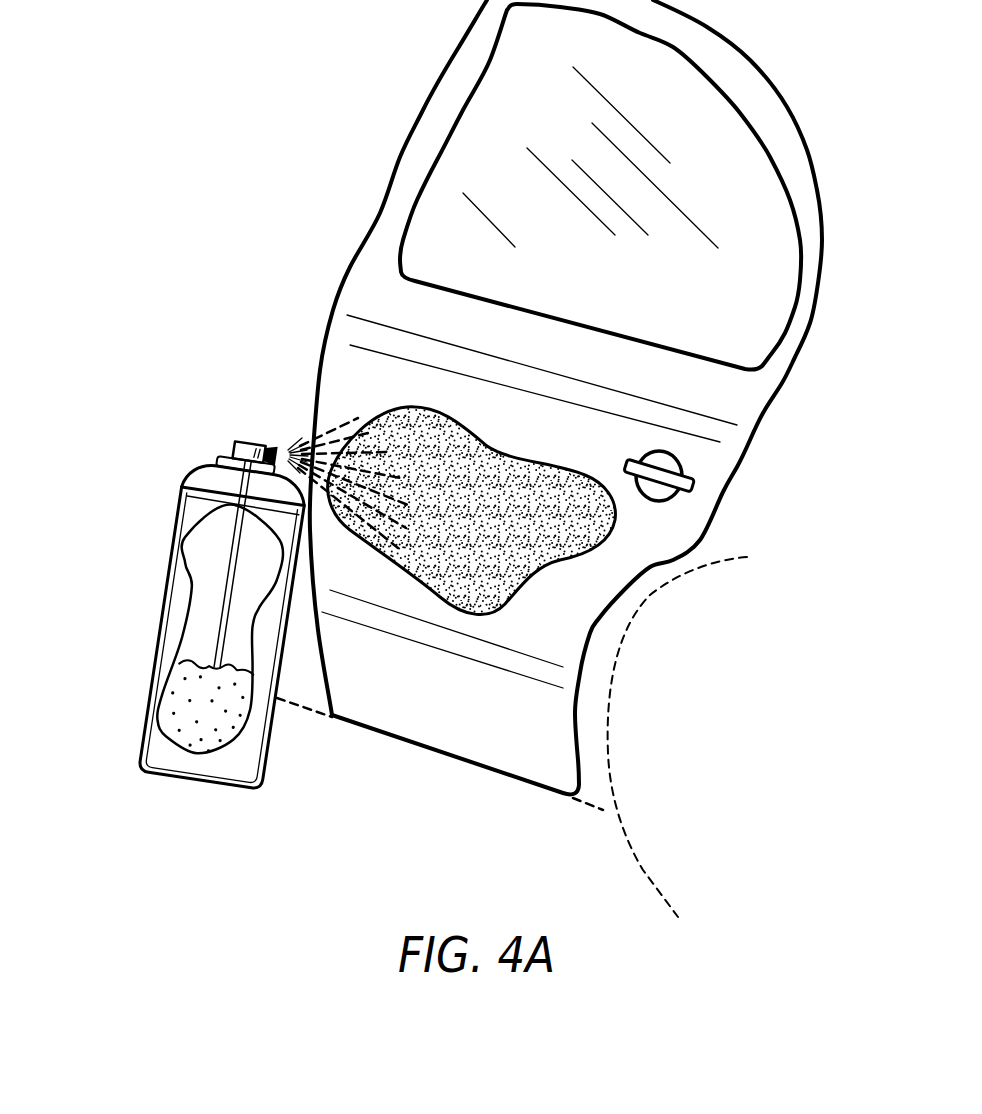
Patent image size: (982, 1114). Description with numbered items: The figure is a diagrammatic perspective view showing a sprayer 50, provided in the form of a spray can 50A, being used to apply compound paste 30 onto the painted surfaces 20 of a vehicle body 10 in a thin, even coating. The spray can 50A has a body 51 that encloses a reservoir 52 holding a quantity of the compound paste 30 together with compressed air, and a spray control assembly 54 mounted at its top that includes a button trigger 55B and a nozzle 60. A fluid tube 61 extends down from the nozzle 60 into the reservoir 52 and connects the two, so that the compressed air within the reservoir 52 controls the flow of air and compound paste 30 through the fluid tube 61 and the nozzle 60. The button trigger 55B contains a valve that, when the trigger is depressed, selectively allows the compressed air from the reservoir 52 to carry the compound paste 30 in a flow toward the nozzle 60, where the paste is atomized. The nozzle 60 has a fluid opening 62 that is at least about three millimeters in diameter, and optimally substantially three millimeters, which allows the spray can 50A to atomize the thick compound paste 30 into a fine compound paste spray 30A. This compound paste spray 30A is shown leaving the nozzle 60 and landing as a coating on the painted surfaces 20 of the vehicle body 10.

The vehicle body 10 is at (303, 712).
The painted surfaces 20 is at (738, 393).
The compound paste 30 is at (208, 707).
The compound paste spray 30A is at (353, 421).
The sprayer 50 is at (188, 556).
The spray can 50A is at (221, 638).
The body 51 is at (244, 488).
The reservoir 52 is at (220, 630).
The spray control assembly 54 is at (248, 451).
The button trigger 55B is at (245, 465).
The nozzle 60 is at (287, 398).
The fluid tube 61 is at (232, 564).
The fluid opening 62 is at (270, 455).